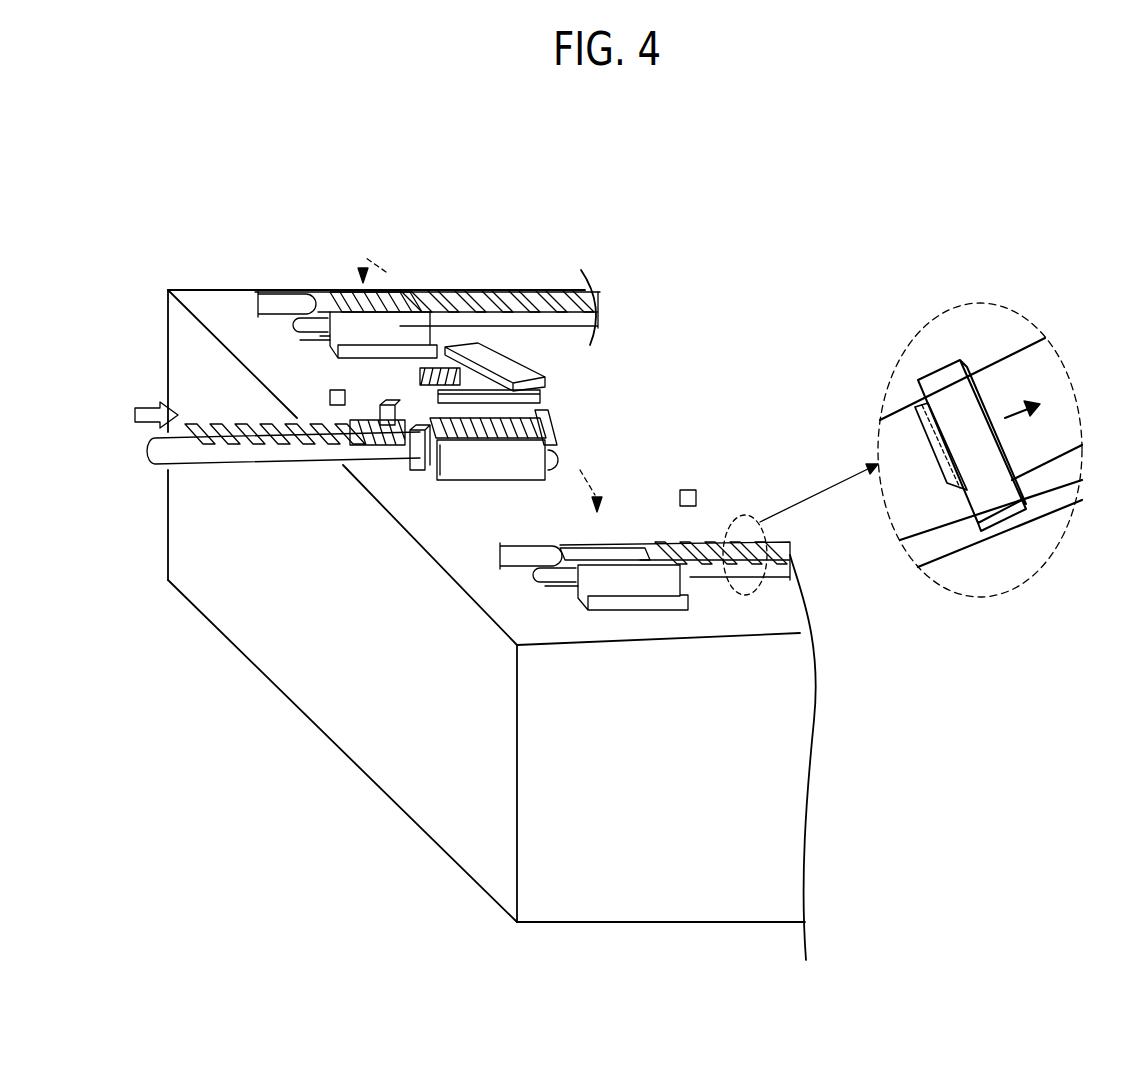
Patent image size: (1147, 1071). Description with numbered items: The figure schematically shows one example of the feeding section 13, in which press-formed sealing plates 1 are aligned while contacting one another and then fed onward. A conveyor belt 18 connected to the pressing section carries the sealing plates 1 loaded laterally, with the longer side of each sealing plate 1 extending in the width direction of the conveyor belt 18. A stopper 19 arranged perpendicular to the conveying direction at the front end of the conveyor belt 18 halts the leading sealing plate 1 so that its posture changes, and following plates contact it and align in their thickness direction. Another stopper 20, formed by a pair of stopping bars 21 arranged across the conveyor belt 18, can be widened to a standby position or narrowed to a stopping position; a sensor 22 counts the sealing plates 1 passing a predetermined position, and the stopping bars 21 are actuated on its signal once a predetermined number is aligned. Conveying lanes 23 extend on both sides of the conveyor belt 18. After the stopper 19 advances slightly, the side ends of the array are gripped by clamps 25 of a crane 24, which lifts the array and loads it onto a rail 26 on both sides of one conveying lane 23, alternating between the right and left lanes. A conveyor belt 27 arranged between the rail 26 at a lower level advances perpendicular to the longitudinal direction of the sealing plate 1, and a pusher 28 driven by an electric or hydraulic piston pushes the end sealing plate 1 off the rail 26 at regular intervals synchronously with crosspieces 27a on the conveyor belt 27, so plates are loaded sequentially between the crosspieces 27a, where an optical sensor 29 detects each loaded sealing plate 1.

The sealing plate 1 is at (235, 452).
The feeding section 13 is at (733, 150).
The conveyor belt 18 is at (150, 452).
The stopper 19 is at (565, 432).
The another stopper 20 is at (557, 396).
The stopping bars 21 is at (390, 410).
The sensor 22 is at (328, 397).
The conveying lanes 23 is at (497, 275).
The crane 24 is at (528, 373).
The clamps 25 is at (612, 362).
The rail 26 is at (345, 282).
The conveyor belt 27 is at (300, 320).
The crosspieces 27a is at (925, 433).
The pusher 28 is at (280, 300).
The optical sensor 29 is at (686, 490).